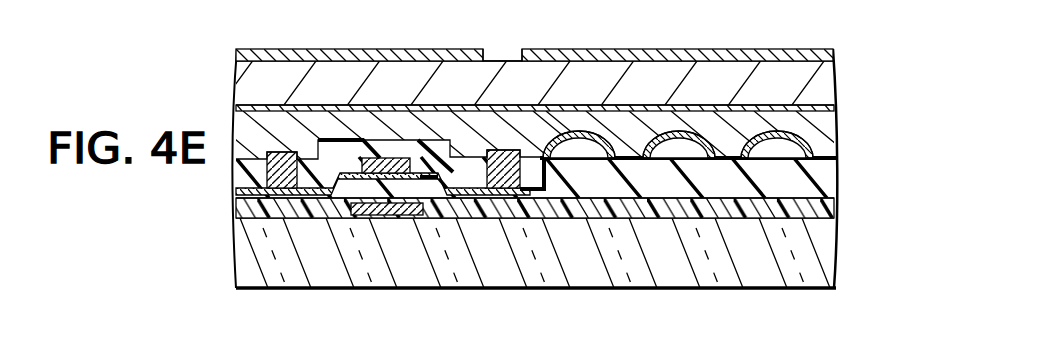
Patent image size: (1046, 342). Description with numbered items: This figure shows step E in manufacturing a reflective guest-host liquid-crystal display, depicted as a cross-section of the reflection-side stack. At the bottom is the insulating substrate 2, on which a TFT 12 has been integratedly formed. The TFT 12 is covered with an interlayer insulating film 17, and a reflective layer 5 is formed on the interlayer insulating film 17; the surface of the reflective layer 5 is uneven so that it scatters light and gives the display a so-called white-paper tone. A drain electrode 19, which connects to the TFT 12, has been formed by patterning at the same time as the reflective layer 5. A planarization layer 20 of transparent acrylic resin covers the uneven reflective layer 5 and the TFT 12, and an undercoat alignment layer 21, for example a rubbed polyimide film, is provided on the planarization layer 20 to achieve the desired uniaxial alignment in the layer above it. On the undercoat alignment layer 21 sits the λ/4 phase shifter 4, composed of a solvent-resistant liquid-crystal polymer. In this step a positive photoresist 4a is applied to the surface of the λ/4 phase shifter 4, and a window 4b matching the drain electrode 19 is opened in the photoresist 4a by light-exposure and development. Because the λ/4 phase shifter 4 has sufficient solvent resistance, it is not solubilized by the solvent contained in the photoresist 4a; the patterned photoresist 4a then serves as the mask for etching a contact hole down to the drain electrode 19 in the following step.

The insulating substrate 2 is at (818, 246).
The λ/4 phase shifter 4 is at (822, 86).
The positive photoresist 4a is at (830, 50).
The window 4b is at (507, 56).
The reflective layer 5 is at (818, 149).
The TFT 12 is at (384, 221).
The interlayer insulating film 17 is at (823, 176).
The drain electrode 19 is at (519, 170).
The planarization layer 20 is at (818, 130).
The undercoat alignment layer 21 is at (824, 113).